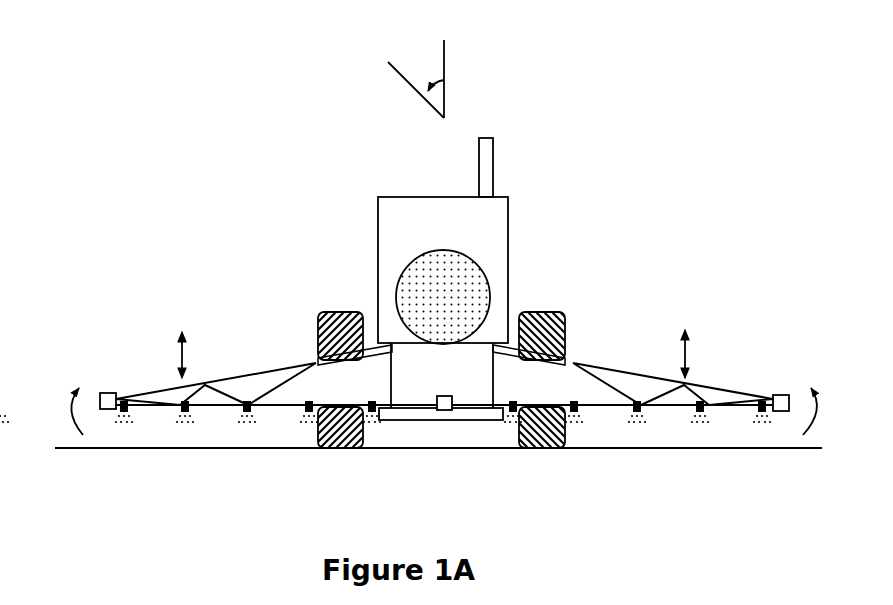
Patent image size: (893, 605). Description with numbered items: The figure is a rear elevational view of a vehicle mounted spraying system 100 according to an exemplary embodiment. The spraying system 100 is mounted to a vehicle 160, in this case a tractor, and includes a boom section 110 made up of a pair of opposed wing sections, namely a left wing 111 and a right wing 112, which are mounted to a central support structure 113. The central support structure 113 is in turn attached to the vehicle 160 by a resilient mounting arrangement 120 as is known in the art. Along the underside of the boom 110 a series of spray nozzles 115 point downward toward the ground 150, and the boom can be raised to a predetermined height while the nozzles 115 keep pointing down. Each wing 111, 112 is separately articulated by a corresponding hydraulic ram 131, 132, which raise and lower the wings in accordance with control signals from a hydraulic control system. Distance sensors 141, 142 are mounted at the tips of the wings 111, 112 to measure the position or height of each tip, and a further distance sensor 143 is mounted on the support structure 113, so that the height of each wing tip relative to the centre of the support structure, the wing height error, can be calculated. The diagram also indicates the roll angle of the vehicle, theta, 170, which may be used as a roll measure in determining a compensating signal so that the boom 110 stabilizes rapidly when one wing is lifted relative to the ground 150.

The vehicle mounted spraying system 100 is at (190, 151).
The roll angle of the vehicle 170 is at (403, 46).
The vehicle 160 is at (368, 244).
The resilient mounting arrangement 120 is at (390, 413).
The hydraulic ram 131 is at (350, 311).
The hydraulic ram 132 is at (536, 311).
The boom section 110 is at (264, 351).
The central support structure 113 is at (413, 408).
The distance sensor 141 is at (110, 393).
The distance sensor 142 is at (780, 394).
The distance sensor 143 is at (436, 390).
The left wing section 111 is at (160, 406).
The right wing section 112 is at (722, 411).
The spray nozzles 115 is at (125, 428).
The ground 150 is at (673, 448).